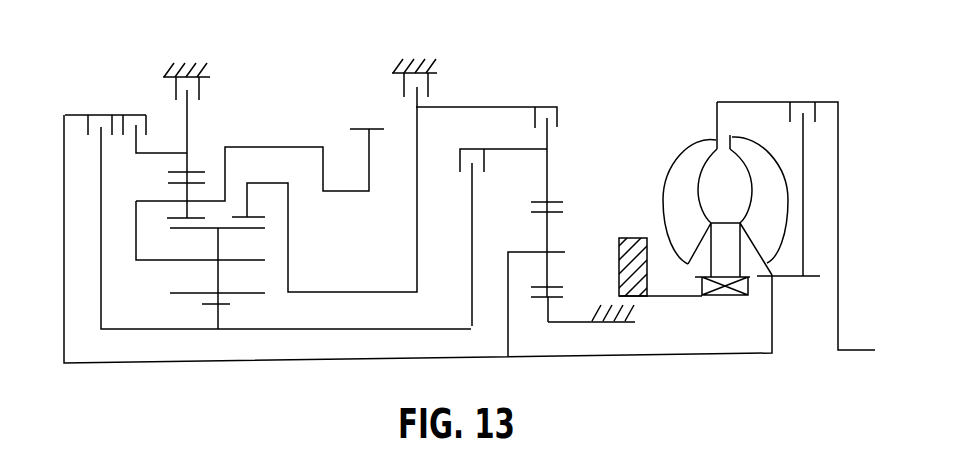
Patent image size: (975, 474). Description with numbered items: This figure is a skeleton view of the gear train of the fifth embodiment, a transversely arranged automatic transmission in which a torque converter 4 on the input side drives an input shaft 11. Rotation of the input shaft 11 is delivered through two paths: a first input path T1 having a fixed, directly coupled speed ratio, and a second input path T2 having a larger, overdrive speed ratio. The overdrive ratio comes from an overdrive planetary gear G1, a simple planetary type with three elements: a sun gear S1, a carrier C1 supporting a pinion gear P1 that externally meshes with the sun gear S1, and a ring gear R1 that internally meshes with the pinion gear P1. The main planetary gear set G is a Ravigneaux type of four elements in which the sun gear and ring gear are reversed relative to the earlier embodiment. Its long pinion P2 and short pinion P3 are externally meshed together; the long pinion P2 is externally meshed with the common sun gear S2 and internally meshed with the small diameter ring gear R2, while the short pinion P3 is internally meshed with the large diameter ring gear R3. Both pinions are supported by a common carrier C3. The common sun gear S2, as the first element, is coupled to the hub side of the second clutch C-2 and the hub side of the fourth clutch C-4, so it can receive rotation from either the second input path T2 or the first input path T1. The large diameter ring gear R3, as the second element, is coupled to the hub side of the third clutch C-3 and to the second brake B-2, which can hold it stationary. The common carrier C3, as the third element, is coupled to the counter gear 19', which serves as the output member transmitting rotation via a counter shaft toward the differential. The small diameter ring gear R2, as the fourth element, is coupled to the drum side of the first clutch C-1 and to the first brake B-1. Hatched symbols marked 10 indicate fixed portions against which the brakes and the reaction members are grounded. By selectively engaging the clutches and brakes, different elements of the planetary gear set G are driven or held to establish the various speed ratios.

The torque converter 4 is at (750, 97).
The transmission case 10 is at (167, 68).
The input shaft 11 is at (302, 361).
The counter gear 19' is at (367, 102).
The first brake B-1 is at (414, 65).
The second brake B-2 is at (186, 67).
The first clutch C-1 is at (487, 188).
The second clutch C-2 is at (500, 224).
The third clutch C-3 is at (152, 120).
The fourth clutch C-4 is at (268, 208).
The planetary gear set G is at (277, 121).
The overdrive planetary gear G1 is at (576, 162).
The ring gear R1 is at (540, 199).
The small diameter ring gear R2 is at (240, 216).
The large diameter ring gear R3 is at (197, 170).
The pinion gear P1 is at (550, 214).
The long pinion P2 is at (190, 293).
The short pinion P3 is at (176, 187).
The carrier C1 is at (518, 252).
The common carrier C3 is at (137, 239).
The sun gear S1 is at (538, 300).
The common sun gear S2 is at (227, 303).
The first input path T1 is at (64, 260).
The second input path T2 is at (549, 186).